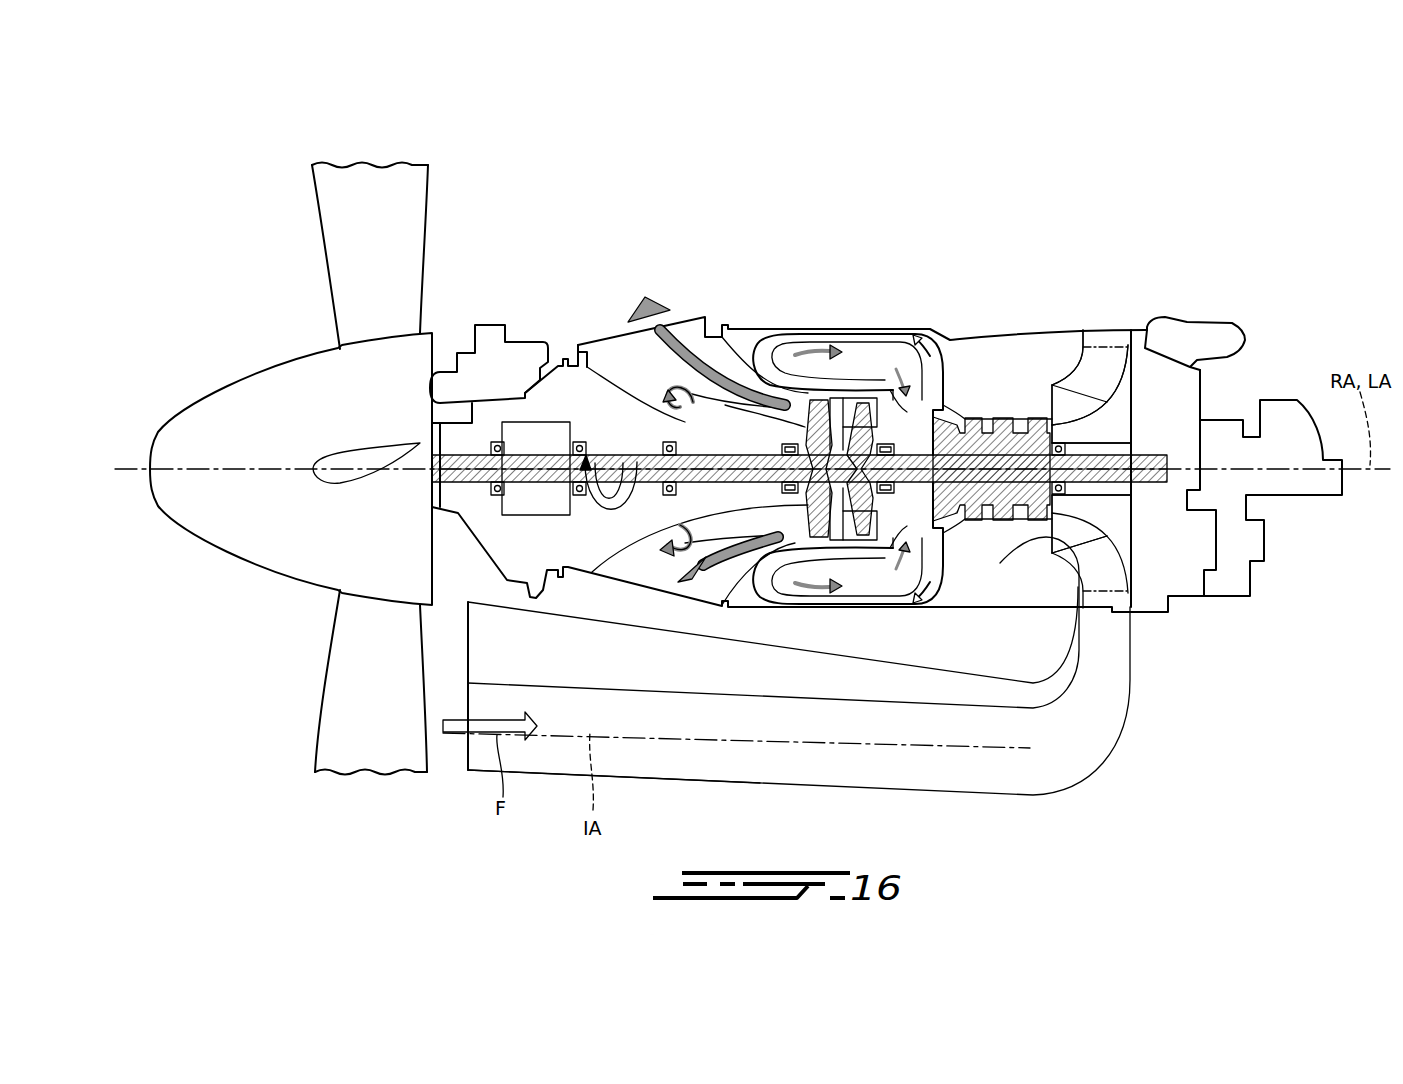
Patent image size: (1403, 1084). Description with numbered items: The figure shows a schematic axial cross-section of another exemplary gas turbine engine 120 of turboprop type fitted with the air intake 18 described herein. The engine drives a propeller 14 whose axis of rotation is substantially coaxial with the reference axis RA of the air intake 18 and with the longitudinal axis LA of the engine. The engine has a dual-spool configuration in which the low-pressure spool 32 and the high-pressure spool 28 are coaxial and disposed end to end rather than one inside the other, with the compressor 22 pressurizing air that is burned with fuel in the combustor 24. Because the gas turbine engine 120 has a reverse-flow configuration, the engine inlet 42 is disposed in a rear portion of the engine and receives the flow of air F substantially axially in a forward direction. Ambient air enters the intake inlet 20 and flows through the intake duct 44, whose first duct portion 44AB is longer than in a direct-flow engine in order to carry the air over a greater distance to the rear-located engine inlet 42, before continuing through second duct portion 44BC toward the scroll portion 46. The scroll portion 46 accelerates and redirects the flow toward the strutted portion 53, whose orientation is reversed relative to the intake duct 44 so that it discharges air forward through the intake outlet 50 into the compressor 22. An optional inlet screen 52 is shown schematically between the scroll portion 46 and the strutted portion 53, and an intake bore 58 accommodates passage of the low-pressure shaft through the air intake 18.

The gas turbine engine 120 is at (250, 229).
The propeller 14 is at (340, 718).
The low-pressure spool 32 is at (612, 455).
The combustor 24 is at (813, 397).
The high-pressure spool 28 is at (898, 407).
The compressor 22 is at (995, 415).
The engine inlet 42 is at (1045, 388).
The inlet screen 52 is at (1100, 345).
The scroll portion 46 is at (1113, 367).
The intake bore 58 is at (1113, 487).
The strutted portion 53 is at (1103, 512).
The intake outlet 50 is at (1000, 563).
The second duct portion 44BC is at (1113, 662).
The first duct portion 44AB is at (767, 758).
The intake duct 44 is at (1012, 775).
The air intake 18 is at (1148, 772).
The intake inlet 20 is at (465, 750).